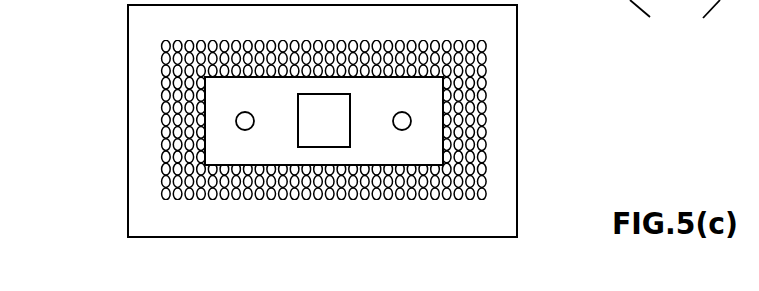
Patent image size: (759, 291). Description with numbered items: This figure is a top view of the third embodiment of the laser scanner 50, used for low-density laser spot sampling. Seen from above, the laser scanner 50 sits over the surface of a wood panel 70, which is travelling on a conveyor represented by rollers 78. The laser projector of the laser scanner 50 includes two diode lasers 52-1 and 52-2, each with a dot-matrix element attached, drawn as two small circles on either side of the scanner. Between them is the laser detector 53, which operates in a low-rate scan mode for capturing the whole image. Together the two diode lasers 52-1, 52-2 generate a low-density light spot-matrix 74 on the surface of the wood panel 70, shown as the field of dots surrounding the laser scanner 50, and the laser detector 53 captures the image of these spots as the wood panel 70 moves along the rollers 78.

The wood panel 70 is at (505, 67).
The low-density light spot-matrix 74 is at (487, 181).
The laser scanner 50 is at (443, 122).
The laser detector 53 is at (324, 120).
The diode laser 52-1 is at (245, 108).
The diode laser 52-2 is at (401, 108).
The rollers 78 is at (675, 20).